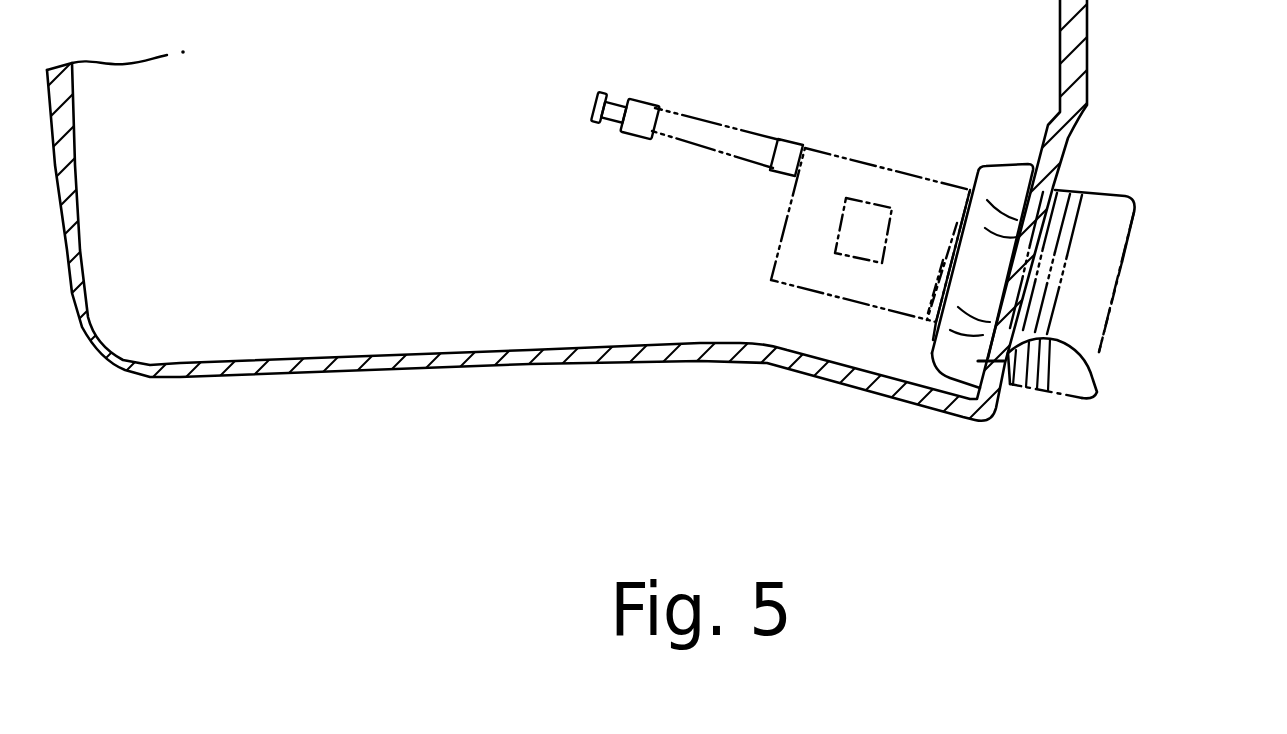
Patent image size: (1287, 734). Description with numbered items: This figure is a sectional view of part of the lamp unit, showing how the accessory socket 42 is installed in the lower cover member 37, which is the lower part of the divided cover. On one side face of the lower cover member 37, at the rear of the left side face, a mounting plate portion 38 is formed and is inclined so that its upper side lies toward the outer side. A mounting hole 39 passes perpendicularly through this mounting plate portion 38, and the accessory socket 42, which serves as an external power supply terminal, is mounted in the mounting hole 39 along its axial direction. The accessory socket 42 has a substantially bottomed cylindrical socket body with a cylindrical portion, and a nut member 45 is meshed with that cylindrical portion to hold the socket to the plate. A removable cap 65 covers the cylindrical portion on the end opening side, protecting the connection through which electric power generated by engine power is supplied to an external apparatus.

The lower cover member 37 is at (1090, 62).
The mounting plate portion 38 is at (1060, 150).
The mounting hole 39 is at (1095, 386).
The accessory socket 42 is at (923, 177).
The nut member 45 is at (1013, 160).
The cap 65 is at (1138, 218).